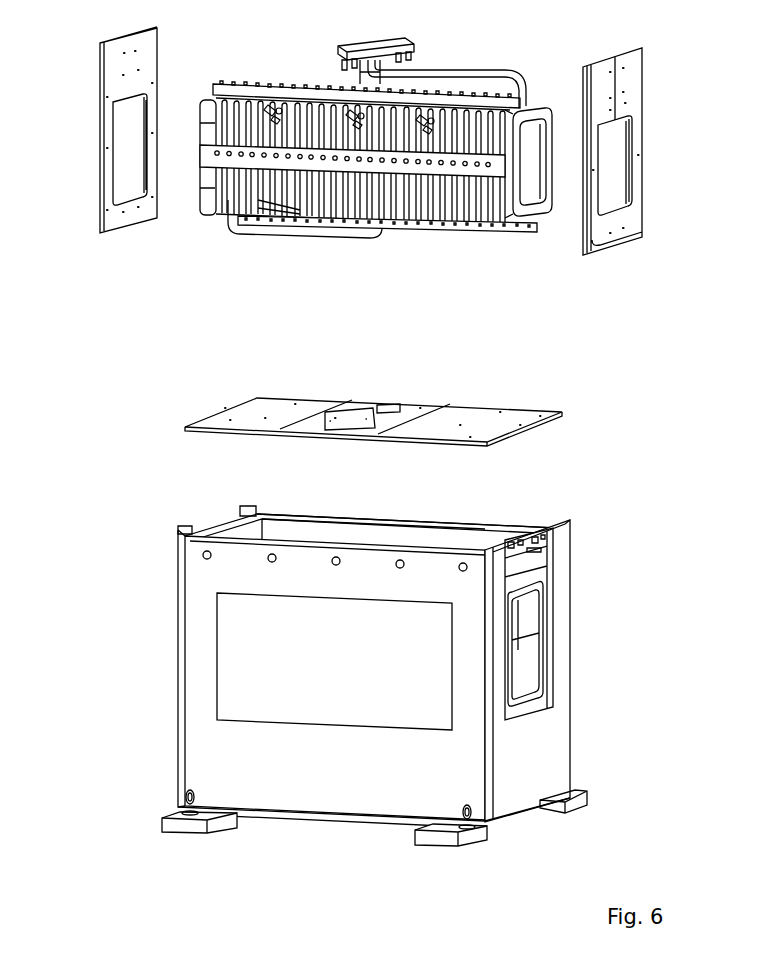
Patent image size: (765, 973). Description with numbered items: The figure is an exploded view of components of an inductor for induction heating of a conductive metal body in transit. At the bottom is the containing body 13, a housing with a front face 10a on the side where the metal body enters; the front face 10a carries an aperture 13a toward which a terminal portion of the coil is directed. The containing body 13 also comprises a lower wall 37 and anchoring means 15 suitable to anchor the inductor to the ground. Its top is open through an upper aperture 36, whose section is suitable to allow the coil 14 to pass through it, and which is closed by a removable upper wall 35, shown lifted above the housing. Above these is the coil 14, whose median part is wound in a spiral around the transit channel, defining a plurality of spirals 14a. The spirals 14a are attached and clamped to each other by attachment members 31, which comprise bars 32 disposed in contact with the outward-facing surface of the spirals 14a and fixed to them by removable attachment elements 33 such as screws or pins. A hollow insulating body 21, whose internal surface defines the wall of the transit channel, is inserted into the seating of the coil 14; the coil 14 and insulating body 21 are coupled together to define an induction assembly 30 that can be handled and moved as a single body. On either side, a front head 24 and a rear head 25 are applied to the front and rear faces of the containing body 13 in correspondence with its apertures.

The front face 10a is at (535, 752).
The containing body 13 is at (178, 682).
The aperture 13a is at (535, 630).
The coil 14 is at (222, 126).
The spirals 14a is at (292, 212).
The anchoring means 15 is at (215, 827).
The insulating body 21 is at (547, 111).
The front head 24 is at (631, 83).
The rear head 25 is at (100, 100).
The induction assembly 30 is at (288, 68).
The attachment members 31 is at (525, 93).
The bars 32 is at (474, 100).
The removable attachment elements 33 is at (443, 91).
The upper wall 35 is at (487, 420).
The upper aperture 36 is at (463, 550).
The lower wall 37 is at (312, 814).